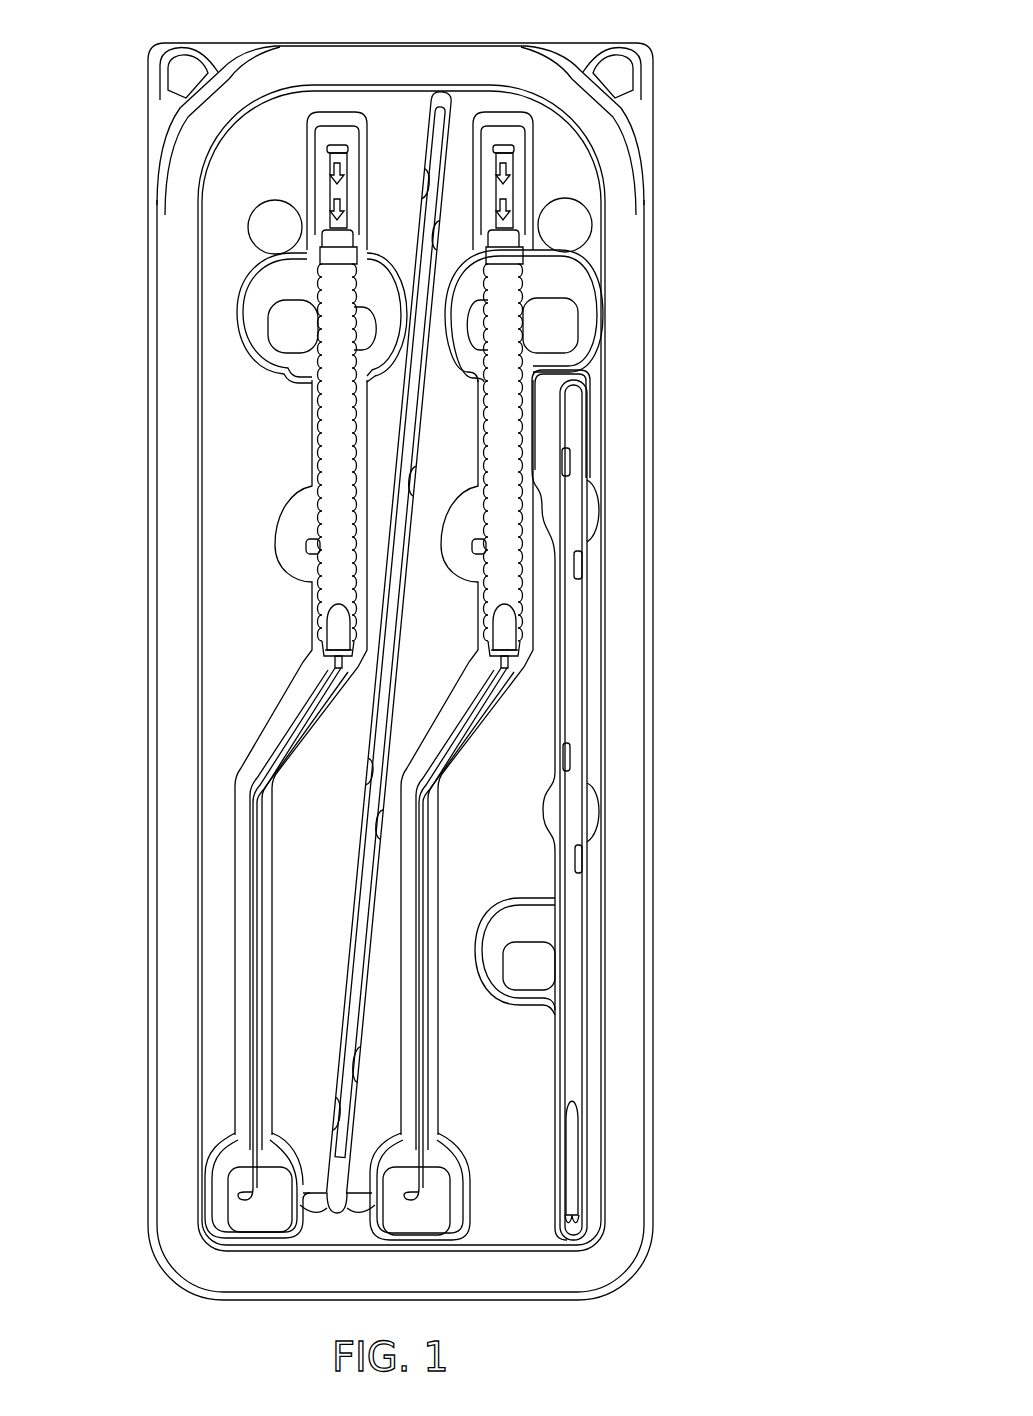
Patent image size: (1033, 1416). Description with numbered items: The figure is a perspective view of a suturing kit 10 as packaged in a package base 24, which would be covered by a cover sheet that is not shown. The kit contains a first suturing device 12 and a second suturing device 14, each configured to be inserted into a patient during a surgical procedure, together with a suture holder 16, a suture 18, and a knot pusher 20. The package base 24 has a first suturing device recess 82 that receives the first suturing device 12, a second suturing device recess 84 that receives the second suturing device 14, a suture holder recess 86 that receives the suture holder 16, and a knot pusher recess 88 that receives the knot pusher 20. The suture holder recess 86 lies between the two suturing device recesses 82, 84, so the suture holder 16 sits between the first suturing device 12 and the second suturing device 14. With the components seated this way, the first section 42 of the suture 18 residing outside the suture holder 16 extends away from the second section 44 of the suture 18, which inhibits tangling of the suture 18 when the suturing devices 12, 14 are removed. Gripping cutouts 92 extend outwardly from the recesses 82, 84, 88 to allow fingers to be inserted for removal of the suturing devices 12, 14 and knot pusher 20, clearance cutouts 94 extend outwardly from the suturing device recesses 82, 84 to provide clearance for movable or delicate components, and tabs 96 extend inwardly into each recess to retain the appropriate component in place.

The suturing kit 10 is at (739, 168).
The first suturing device 12 is at (330, 492).
The second suturing device 14 is at (508, 397).
The suture holder 16 is at (436, 247).
The suture 18 is at (340, 1212).
The knot pusher 20 is at (574, 722).
The package base 24 is at (590, 50).
The first section of the suture 42 is at (262, 1215).
The second section of the suture 44 is at (405, 1215).
The first suturing device recess 82 is at (316, 596).
The second suturing device recess 84 is at (532, 464).
The suture holder recess 86 is at (444, 98).
The knot pusher recess 88 is at (592, 520).
The gripping cutouts 92 is at (262, 318).
The clearance cutouts 94 is at (305, 545).
The tabs 96 is at (318, 437).